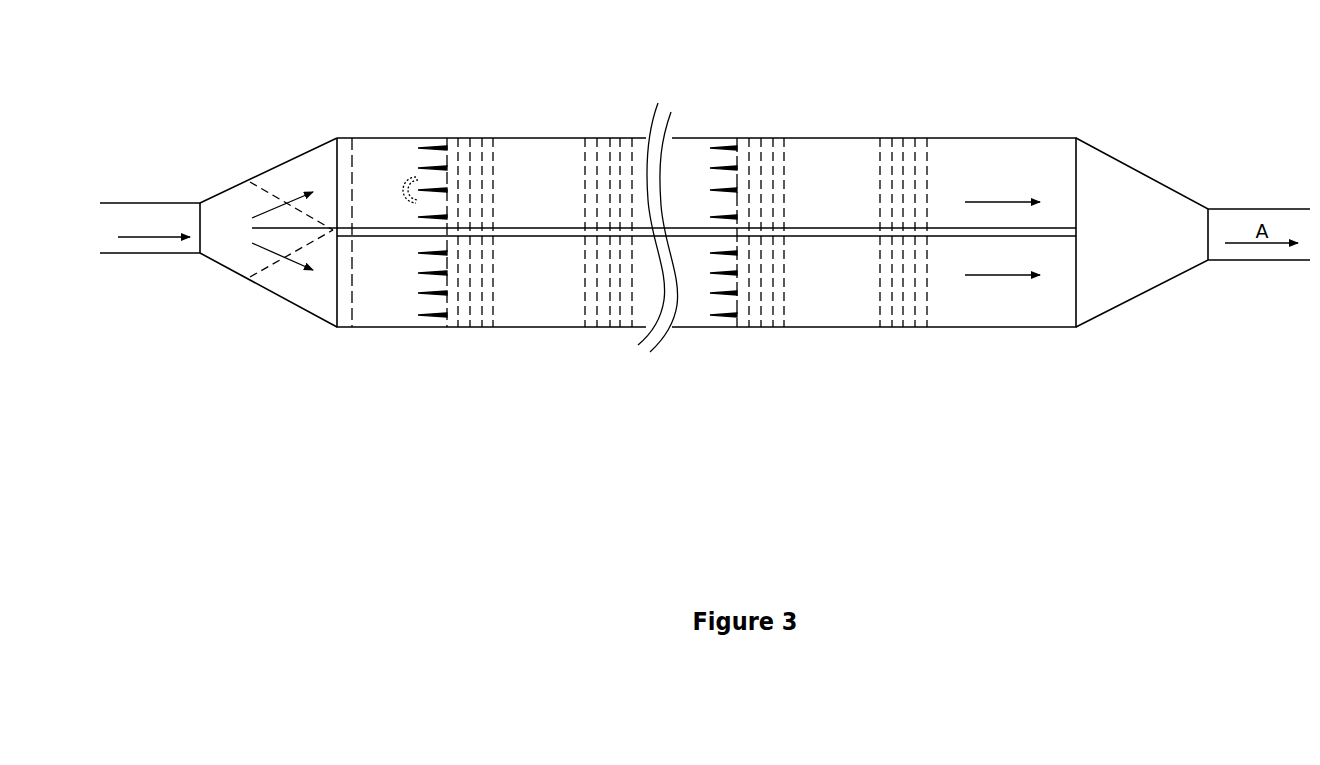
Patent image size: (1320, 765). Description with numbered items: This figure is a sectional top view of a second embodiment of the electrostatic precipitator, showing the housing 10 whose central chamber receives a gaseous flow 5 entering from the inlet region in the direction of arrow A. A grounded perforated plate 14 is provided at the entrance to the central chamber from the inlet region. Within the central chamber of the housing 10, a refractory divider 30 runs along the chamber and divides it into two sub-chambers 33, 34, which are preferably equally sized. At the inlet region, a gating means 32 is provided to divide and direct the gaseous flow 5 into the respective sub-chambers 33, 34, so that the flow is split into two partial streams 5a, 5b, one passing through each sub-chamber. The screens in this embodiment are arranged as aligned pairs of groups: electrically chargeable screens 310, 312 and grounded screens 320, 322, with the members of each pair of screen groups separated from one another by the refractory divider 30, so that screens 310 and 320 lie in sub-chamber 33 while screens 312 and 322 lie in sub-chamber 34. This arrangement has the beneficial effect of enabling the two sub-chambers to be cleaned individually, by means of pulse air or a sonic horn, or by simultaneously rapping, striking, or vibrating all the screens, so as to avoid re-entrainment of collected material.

The housing 10 is at (318, 93).
The gaseous flow 5 is at (134, 228).
The first partial exhaust gas stream 5a is at (646, 197).
The second partial exhaust gas stream 5b is at (646, 270).
The grounded perforated plate 14 is at (352, 327).
The refractory divider 30 is at (515, 227).
The gating means 32 is at (263, 190).
The sub-chamber 33 is at (313, 170).
The sub-chamber 34 is at (318, 287).
The electrically chargeable screens 310 is at (477, 148).
The electrically chargeable screens 312 is at (468, 310).
The grounded screens 320 is at (617, 150).
The grounded screens 322 is at (608, 310).